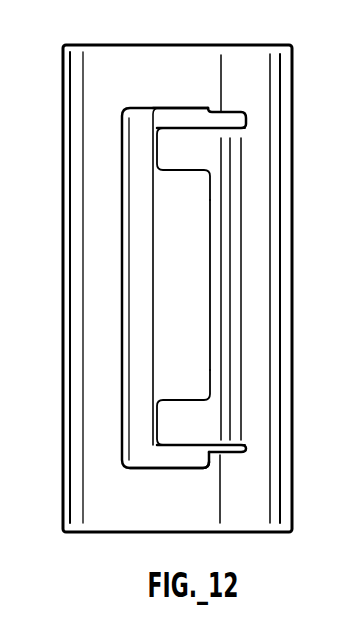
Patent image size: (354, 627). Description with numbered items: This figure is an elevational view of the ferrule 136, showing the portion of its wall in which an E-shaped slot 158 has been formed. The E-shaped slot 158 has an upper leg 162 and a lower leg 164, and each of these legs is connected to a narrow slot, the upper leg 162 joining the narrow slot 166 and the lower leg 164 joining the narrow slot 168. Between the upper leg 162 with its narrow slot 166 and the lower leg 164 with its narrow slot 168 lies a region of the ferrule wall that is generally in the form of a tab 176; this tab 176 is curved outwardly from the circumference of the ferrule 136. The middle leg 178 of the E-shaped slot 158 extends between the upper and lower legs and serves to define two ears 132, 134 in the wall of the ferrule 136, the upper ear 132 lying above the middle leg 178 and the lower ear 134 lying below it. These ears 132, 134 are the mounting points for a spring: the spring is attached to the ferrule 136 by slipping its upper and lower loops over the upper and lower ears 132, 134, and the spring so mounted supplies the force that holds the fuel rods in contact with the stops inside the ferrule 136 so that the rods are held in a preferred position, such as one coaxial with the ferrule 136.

The ferrule 136 is at (79, 41).
The E-shaped slot 158 is at (130, 207).
The upper leg 162 is at (177, 114).
The lower leg 164 is at (180, 467).
The narrow slot 166 is at (235, 123).
The narrow slot 168 is at (228, 452).
The ear 132 is at (187, 150).
The ear 134 is at (182, 423).
The tab 176 is at (228, 277).
The middle leg 178 is at (209, 233).